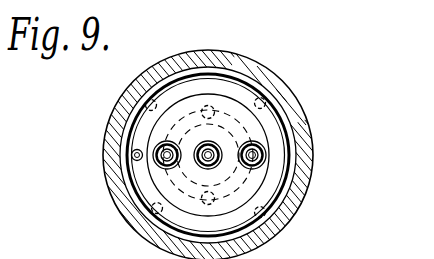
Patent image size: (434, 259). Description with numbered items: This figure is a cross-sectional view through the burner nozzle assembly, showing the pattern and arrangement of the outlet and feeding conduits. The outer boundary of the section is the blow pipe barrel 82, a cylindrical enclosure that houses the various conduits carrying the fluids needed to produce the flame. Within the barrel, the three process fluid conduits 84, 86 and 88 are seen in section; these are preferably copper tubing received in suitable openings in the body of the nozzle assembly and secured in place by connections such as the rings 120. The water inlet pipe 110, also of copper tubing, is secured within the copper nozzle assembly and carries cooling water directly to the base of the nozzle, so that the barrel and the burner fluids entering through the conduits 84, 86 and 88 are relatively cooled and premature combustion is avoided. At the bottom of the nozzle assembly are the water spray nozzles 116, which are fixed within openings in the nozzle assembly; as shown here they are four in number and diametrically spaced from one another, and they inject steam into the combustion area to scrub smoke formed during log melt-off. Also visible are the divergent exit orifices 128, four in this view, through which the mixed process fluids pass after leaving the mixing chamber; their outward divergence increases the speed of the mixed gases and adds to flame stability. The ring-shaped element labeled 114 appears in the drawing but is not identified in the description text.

The blow pipe barrel 82 is at (299, 99).
The conduit 84 is at (267, 156).
The conduit 86 is at (218, 163).
The conduit 88 is at (156, 166).
The water inlet pipe 110 is at (113, 140).
The inner ring 114 is at (282, 180).
The water spray nozzles 116 is at (140, 97).
The rings 120 is at (272, 133).
The divergent exit orifices 128 is at (209, 106).